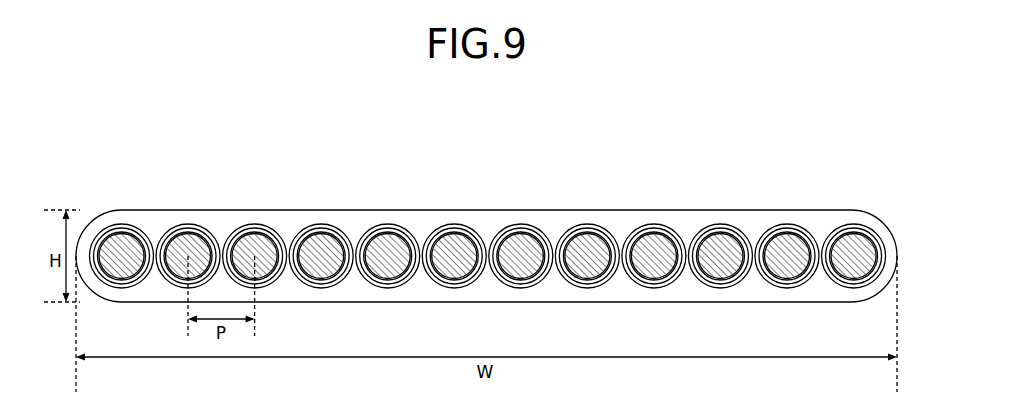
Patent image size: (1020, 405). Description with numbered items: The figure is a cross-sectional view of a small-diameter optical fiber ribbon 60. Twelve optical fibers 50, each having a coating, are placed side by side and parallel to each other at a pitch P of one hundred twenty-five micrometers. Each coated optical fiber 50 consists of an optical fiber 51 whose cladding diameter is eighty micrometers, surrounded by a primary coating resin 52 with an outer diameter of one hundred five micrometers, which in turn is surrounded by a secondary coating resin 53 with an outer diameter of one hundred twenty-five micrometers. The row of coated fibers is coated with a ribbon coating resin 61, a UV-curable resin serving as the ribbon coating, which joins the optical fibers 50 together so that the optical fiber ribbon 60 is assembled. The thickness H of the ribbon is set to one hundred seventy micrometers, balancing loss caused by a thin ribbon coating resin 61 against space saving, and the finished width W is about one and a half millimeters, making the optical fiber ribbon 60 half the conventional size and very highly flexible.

The optical fiber having a coating 50 is at (130, 215).
The optical fiber 51 is at (196, 225).
The primary coating resin 52 is at (266, 234).
The secondary coating resin 53 is at (338, 243).
The optical fiber ribbon 60 is at (633, 140).
The ribbon coating resin 61 is at (688, 222).